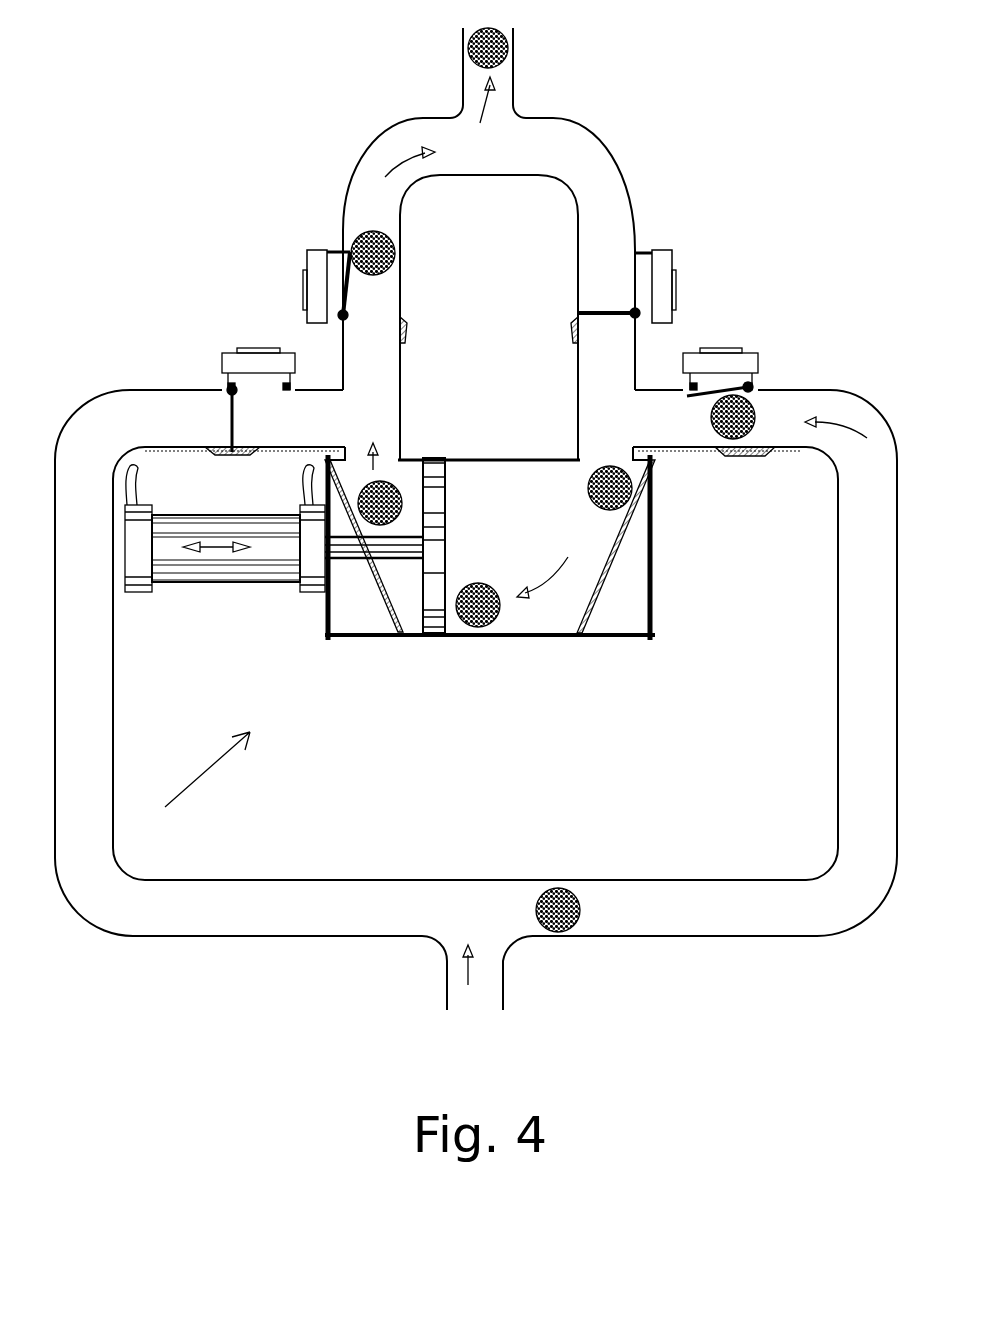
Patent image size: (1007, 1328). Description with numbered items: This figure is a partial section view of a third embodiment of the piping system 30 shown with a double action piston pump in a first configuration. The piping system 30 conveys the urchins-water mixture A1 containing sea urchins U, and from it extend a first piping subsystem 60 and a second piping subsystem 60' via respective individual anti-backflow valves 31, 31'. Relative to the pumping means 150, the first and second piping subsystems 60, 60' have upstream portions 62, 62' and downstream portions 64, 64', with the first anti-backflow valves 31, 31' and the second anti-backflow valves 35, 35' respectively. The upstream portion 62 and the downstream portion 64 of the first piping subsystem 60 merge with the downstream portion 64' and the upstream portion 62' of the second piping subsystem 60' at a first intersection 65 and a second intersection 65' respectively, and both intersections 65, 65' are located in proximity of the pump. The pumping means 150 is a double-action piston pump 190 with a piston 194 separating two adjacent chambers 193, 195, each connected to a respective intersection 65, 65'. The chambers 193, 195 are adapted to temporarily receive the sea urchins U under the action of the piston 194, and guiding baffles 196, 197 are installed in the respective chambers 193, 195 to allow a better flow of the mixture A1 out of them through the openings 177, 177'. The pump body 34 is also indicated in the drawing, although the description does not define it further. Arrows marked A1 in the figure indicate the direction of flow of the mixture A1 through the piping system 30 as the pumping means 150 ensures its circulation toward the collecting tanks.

The piping system 30 is at (103, 400).
The first anti-backflow valve 31 is at (753, 354).
The first anti-backflow valve 31' is at (196, 373).
The sensor housing 34 is at (327, 620).
The second anti-backflow valve 35 is at (691, 277).
The second anti-backflow valve 35' is at (243, 274).
The first piping subsystem 60 is at (628, 209).
The second piping subsystem 60' is at (349, 209).
The upstream portion 62 is at (677, 293).
The upstream portion 62' is at (300, 293).
The downstream portion 64 is at (720, 335).
The downstream portion 64' is at (268, 344).
The first intersection 65 is at (430, 317).
The second intersection 65' is at (543, 317).
The pumping means 150 is at (191, 784).
The opening 177 is at (670, 477).
The opening 177' is at (293, 467).
The double-action piston pump 190 is at (225, 582).
The chamber 193 is at (402, 603).
The piston 194 is at (435, 613).
The chamber 195 is at (535, 613).
The guiding baffle 196 is at (377, 590).
The guiding baffle 197 is at (607, 583).
The sea urchins U is at (375, 233).
The urchins-water mixture A1 is at (615, 531).